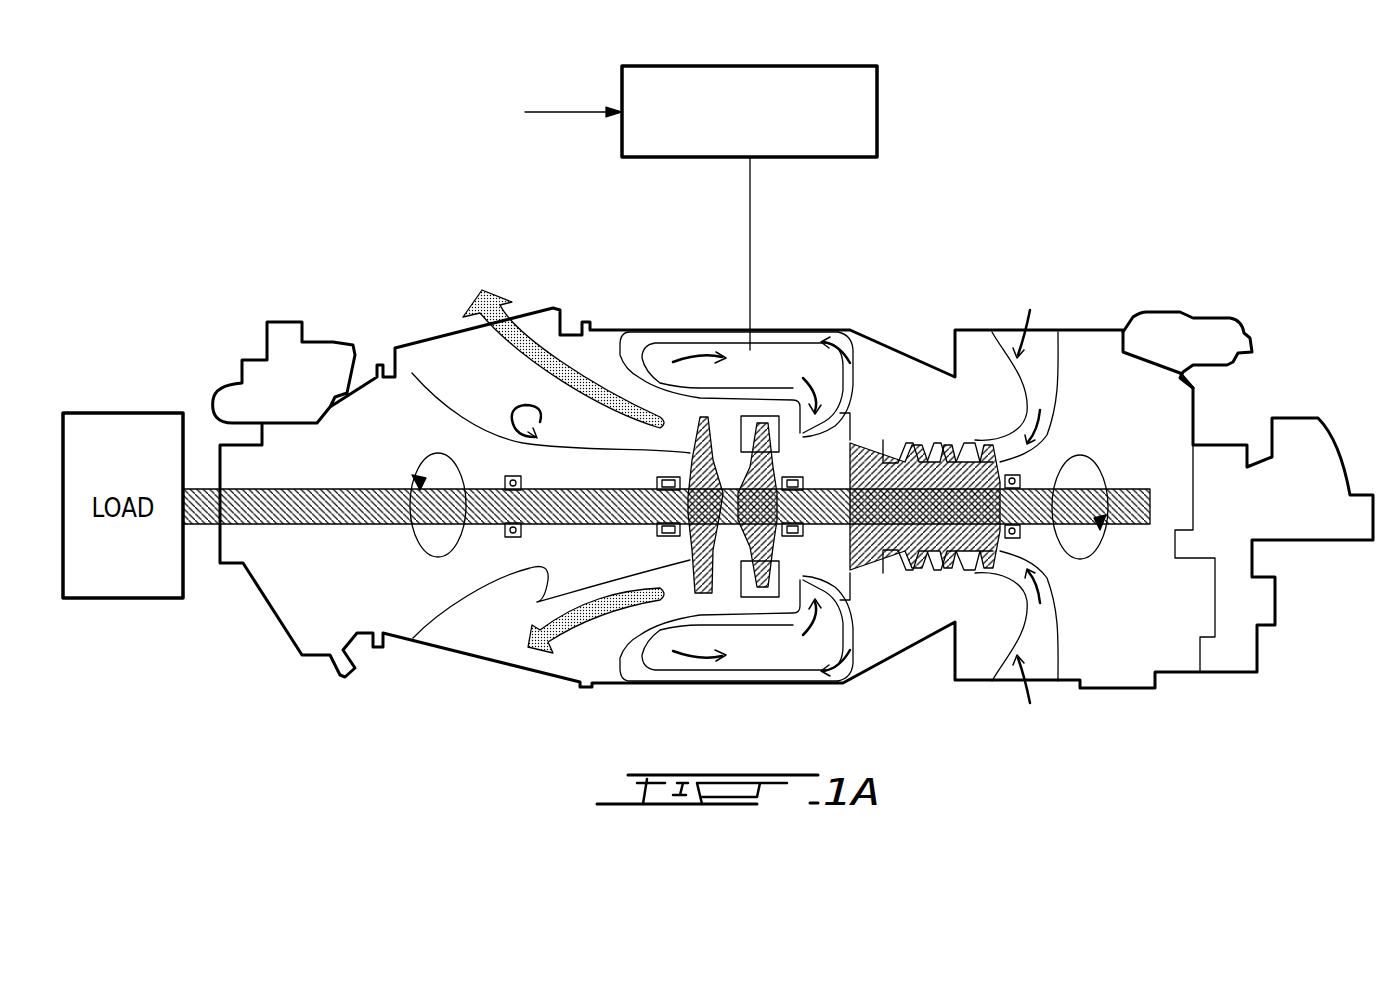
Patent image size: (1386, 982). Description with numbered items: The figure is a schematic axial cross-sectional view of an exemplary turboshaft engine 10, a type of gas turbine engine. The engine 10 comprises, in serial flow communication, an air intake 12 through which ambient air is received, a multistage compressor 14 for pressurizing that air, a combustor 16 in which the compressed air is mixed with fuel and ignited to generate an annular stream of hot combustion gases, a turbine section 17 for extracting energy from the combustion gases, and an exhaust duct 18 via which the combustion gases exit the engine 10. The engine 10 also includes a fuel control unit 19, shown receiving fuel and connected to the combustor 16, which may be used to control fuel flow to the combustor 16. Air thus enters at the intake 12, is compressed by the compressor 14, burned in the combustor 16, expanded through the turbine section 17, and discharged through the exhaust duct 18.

The turboshaft engine 10 is at (1182, 240).
The air intake 12 is at (1043, 352).
The multistage compressor 14 is at (912, 460).
The combustor 16 is at (730, 370).
The turbine section 17 is at (731, 467).
The exhaust duct 18 is at (450, 365).
The fuel control unit 19 is at (877, 112).